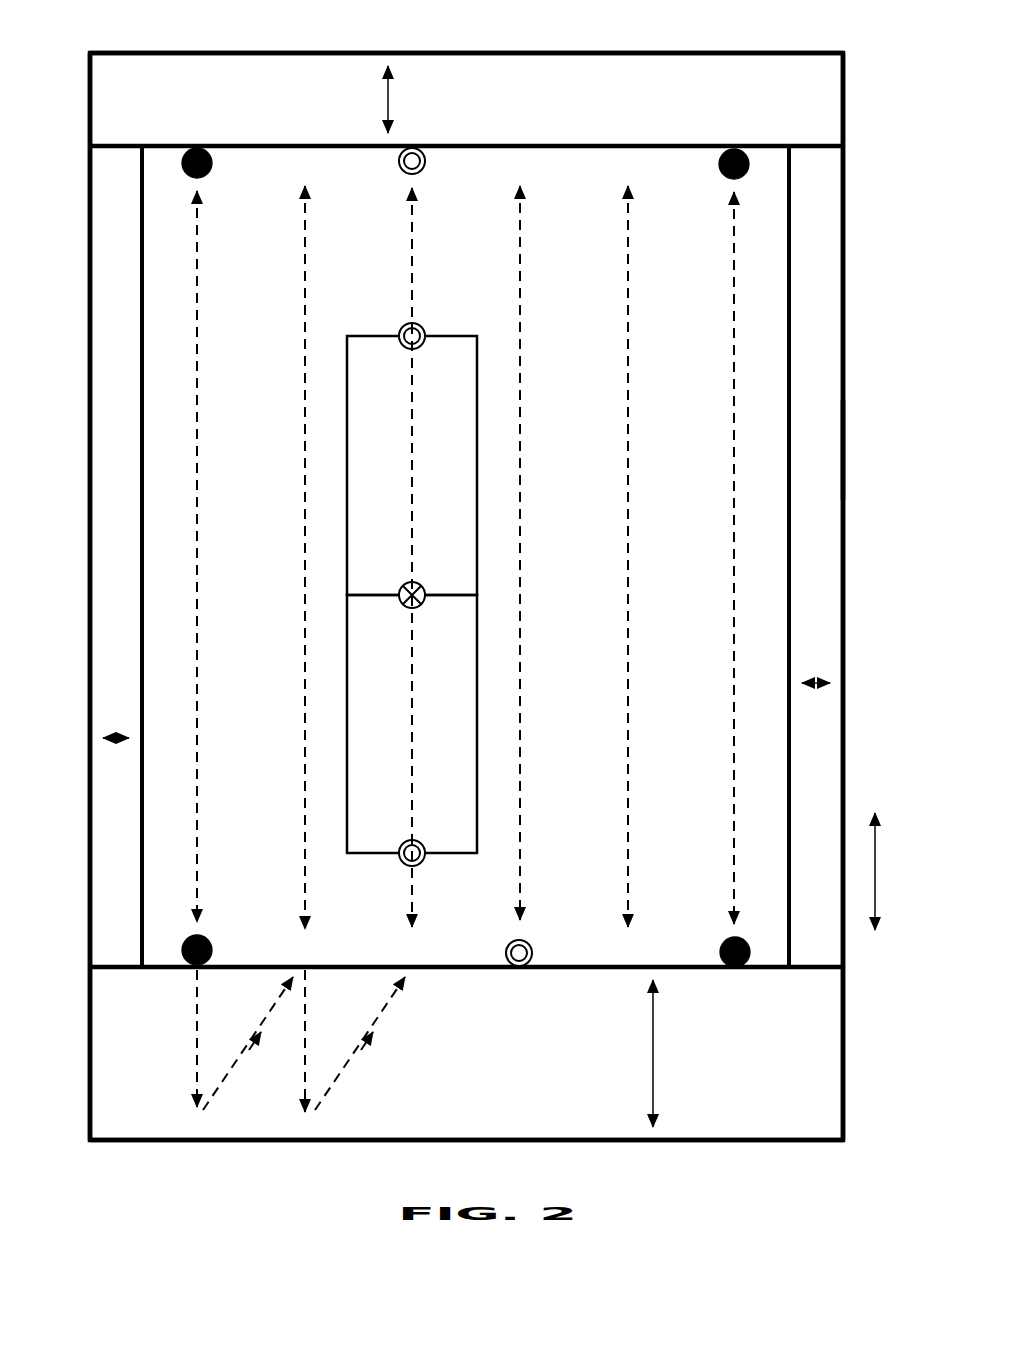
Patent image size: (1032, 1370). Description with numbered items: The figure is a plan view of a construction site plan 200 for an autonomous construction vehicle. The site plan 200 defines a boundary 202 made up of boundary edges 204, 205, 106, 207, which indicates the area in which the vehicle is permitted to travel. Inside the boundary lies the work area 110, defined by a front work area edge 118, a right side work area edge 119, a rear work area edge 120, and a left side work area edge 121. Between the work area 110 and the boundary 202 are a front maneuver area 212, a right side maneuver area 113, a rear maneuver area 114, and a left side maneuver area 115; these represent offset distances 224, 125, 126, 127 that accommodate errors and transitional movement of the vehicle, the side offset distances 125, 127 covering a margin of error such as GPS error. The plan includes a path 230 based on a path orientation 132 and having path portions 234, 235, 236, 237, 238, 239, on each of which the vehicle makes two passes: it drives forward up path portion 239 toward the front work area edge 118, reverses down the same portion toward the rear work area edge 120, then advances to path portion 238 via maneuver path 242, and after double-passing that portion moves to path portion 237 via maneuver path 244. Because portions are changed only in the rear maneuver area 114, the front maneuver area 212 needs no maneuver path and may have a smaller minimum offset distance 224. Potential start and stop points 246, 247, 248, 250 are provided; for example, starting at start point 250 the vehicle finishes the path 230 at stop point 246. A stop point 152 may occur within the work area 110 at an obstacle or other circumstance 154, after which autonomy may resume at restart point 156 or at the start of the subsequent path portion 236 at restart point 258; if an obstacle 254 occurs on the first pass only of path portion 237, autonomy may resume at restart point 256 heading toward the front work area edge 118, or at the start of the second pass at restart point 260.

The construction site plan 200 is at (787, 1158).
The boundary 202 is at (843, 448).
The boundary edge 204 is at (282, 52).
The rear boundary edge 106 is at (258, 1141).
The boundary edge 207 is at (90, 372).
The boundary edge 205 is at (843, 368).
The front work area edge 118 is at (252, 145).
The rear work area edge 120 is at (596, 968).
The left side work area edge 121 is at (141, 652).
The right side work area edge 119 is at (790, 245).
The left side maneuver area 115 is at (116, 556).
The right side maneuver area 113 is at (816, 556).
The work area 110 is at (466, 556).
The front maneuver area 212 is at (466, 99).
The rear maneuver area 114 is at (466, 1053).
The minimum offset distance 224 is at (388, 100).
The offset distance 126 is at (653, 1055).
The offset distance 127 is at (115, 738).
The offset distance 125 is at (820, 683).
The path orientation 132 is at (875, 870).
The obstacle or other circumstance 254 is at (477, 520).
The obstacle or other circumstance 154 is at (477, 710).
The stop point 152 is at (404, 588).
The restart point 256 is at (402, 332).
The restart point 156 is at (402, 847).
The restart point 260 is at (424, 166).
The restart point 258 is at (519, 968).
The start and stop point 248 is at (197, 148).
The start and stop point 247 is at (734, 149).
The start and stop point 250 is at (182, 950).
The start and stop point 246 is at (735, 967).
The path portion 239 is at (200, 905).
The path portion 238 is at (307, 905).
The path portion 237 is at (414, 905).
The path portion 236 is at (522, 905).
The path portion 235 is at (630, 905).
The path portion 234 is at (731, 850).
The path 230 is at (753, 313).
The maneuver path 242 is at (195, 1050).
The maneuver path 244 is at (340, 1078).